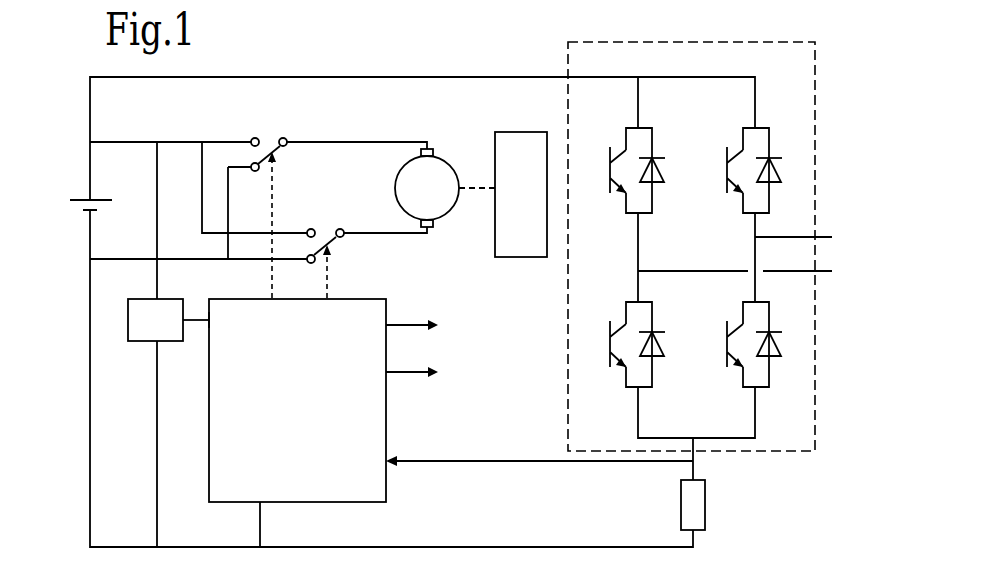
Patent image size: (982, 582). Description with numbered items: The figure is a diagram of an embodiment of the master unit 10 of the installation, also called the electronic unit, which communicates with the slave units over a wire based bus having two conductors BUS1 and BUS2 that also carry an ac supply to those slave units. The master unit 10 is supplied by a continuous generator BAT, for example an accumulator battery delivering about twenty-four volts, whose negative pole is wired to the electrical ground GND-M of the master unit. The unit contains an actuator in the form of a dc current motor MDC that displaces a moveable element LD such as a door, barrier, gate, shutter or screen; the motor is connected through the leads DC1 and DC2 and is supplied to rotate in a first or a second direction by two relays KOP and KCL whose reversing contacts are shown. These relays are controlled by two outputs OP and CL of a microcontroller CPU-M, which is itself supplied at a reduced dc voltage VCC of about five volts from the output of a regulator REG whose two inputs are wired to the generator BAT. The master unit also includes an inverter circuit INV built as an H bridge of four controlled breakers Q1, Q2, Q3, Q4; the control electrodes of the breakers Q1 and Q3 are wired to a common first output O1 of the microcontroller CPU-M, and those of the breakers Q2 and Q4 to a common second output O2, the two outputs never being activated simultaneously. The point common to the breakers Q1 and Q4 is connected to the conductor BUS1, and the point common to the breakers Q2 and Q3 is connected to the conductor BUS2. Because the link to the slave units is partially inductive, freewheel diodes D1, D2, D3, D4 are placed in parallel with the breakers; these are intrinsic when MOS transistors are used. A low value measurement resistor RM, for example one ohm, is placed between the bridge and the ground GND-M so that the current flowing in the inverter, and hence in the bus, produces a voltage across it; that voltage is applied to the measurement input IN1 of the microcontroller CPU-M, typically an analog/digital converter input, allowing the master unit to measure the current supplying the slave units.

The master unit 10 is at (84, 311).
The continuous generator BAT is at (81, 191).
The relay KOP is at (271, 140).
The relay KCL is at (321, 232).
The motor lead 1 DC1 is at (357, 130).
The motor lead 2 DC2 is at (385, 221).
The dc current motor MDC is at (427, 188).
The moveable element LD is at (503, 194).
The output of the microcontroller OP is at (260, 225).
The output of the microcontroller CL is at (341, 271).
The regulator REG is at (168, 320).
The microcontroller CPU-M is at (451, 423).
The reduced dc voltage VCC is at (232, 323).
The first output O1 is at (434, 326).
The second output O2 is at (434, 374).
The measurement input IN1 is at (524, 464).
The electrical ground GND-M is at (301, 524).
The inverter circuit INV is at (726, 247).
The conductor BUS1 is at (820, 237).
The conductor BUS2 is at (761, 272).
The controlled breaker Q1 is at (749, 170).
The controlled breaker Q2 is at (631, 170).
The controlled breaker Q3 is at (631, 344).
The controlled breaker Q4 is at (749, 344).
The freewheel diode D1 is at (779, 185).
The freewheel diode D2 is at (662, 185).
The freewheel diode D3 is at (662, 359).
The freewheel diode D4 is at (779, 359).
The measurement resistor RM is at (713, 505).